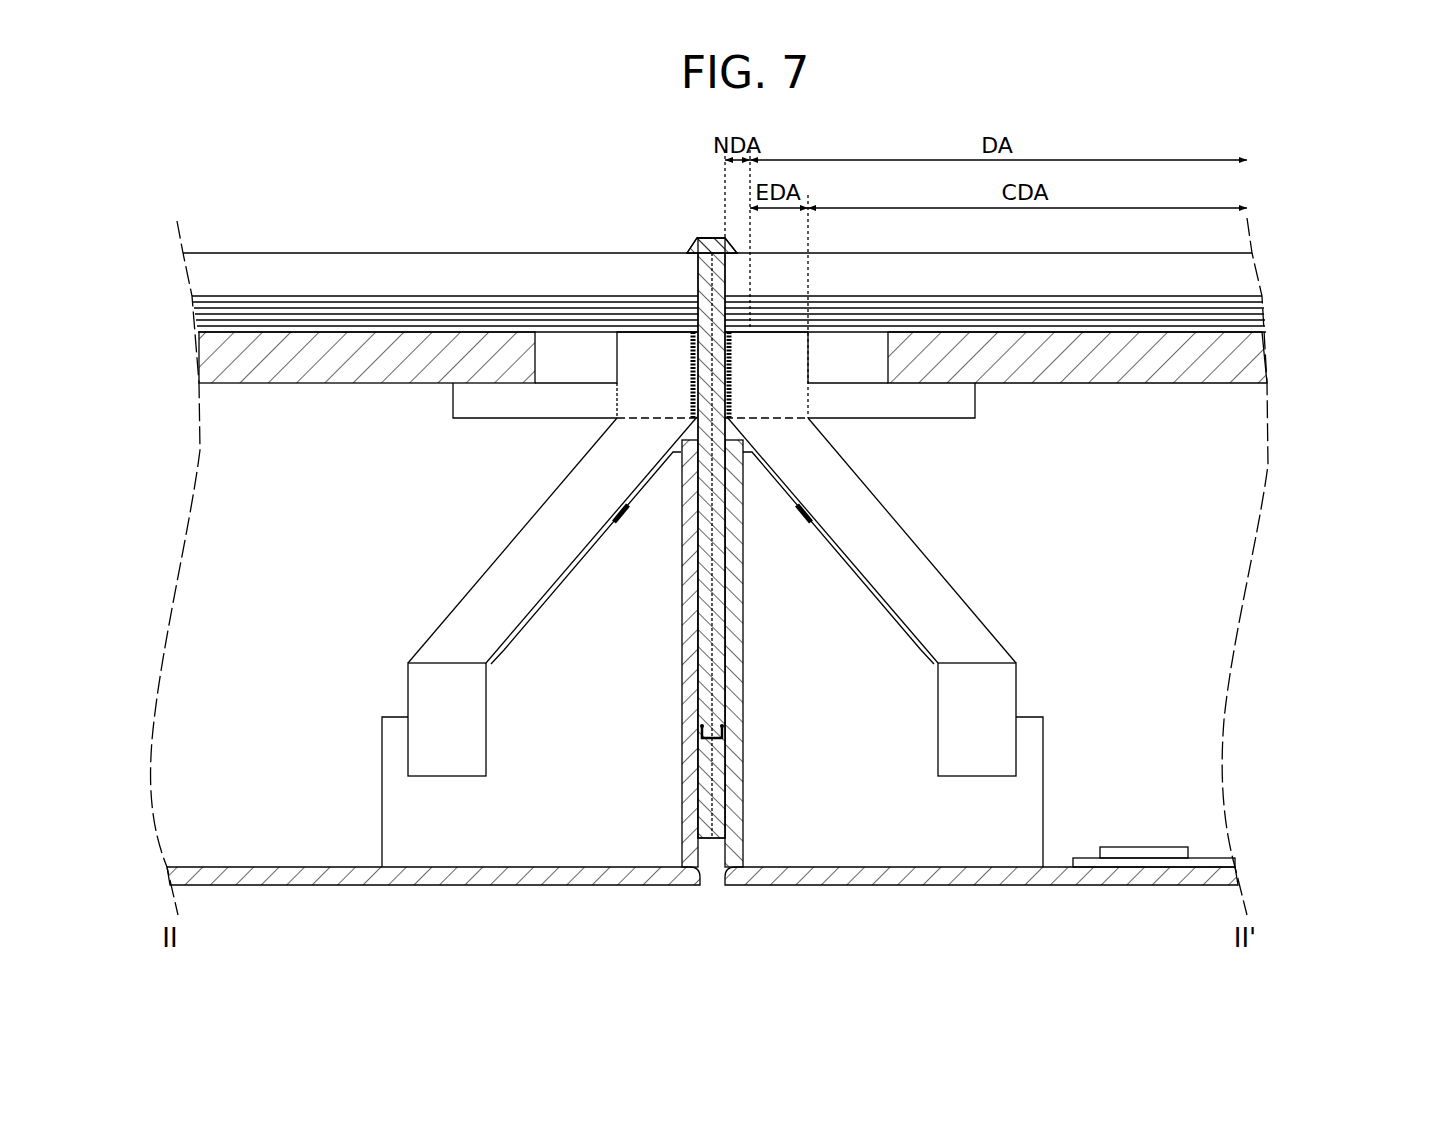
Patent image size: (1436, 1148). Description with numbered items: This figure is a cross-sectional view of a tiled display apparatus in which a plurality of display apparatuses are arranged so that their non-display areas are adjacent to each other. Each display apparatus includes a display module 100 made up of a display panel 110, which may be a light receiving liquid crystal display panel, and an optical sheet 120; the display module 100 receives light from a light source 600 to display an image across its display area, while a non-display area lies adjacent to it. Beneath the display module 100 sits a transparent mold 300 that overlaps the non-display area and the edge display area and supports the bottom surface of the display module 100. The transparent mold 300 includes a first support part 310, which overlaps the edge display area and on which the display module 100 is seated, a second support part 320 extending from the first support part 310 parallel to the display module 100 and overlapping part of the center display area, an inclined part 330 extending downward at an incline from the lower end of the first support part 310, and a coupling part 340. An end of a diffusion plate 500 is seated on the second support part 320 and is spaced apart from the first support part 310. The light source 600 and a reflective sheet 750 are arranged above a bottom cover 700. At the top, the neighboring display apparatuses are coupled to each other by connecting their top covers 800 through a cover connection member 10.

The cover connection member 10 is at (702, 731).
The display module 100 is at (802, 293).
The display panel 110 is at (1262, 273).
The optical sheet 120 is at (1265, 315).
The transparent mold 300 is at (915, 554).
The first support part 310 is at (781, 402).
The second support part 320 is at (957, 400).
The inclined part 330 is at (905, 570).
The coupling part 340 is at (993, 693).
The diffusion plate 500 is at (1250, 357).
The light source 600 is at (1133, 852).
The bottom cover 700 is at (803, 868).
The reflective sheet 750 is at (1183, 862).
The top cover 800 is at (705, 238).